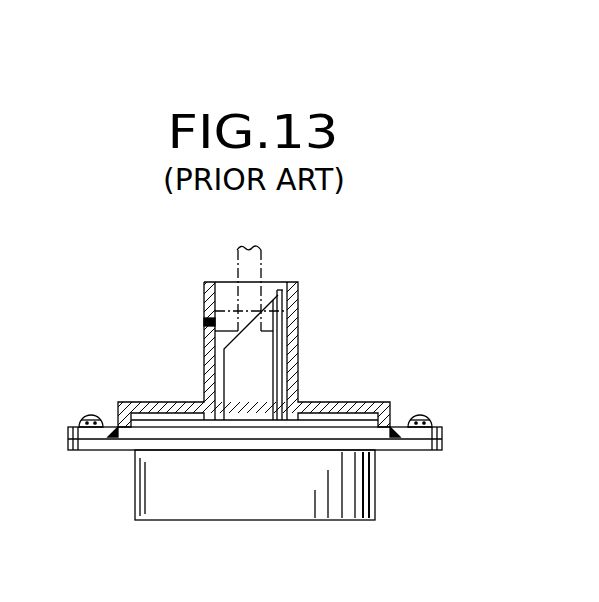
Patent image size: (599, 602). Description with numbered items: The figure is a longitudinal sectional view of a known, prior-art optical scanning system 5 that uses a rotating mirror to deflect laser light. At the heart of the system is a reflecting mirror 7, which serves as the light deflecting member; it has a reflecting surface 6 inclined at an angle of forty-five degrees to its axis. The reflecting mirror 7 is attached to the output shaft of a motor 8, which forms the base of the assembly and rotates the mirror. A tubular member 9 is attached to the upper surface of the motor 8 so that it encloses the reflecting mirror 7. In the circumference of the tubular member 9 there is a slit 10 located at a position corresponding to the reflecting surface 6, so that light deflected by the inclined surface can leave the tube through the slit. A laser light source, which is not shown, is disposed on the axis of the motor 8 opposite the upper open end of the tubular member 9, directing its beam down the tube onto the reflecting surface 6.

The optical scanning system 5 is at (271, 320).
The reflecting surface 6 is at (277, 288).
The reflecting mirror 7 is at (271, 330).
The motor 8 is at (253, 512).
The tubular member 9 is at (300, 367).
The slit 10 is at (203, 322).